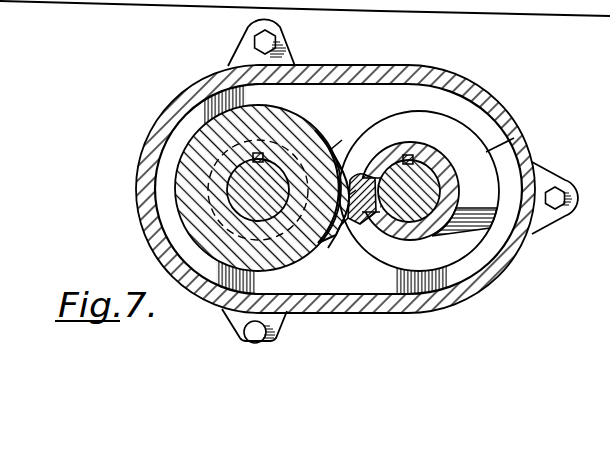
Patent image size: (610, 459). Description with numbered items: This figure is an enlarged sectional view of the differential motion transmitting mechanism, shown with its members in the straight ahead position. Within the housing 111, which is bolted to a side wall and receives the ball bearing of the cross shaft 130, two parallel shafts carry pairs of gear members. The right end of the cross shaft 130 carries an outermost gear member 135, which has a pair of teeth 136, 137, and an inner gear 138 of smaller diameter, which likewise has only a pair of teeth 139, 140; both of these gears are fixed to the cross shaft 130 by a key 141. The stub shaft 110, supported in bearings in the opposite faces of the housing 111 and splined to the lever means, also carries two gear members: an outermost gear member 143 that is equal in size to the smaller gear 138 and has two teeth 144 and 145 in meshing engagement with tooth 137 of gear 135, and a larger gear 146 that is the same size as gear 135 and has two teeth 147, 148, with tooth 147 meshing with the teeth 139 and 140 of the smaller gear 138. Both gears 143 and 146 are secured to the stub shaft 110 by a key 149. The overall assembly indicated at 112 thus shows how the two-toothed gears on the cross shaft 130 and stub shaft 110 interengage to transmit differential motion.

The stub shaft 110 is at (433, 184).
The housing 111 is at (491, 93).
The housing 112 is at (200, 72).
The cross shaft 130 is at (243, 209).
The outermost gear member 135 is at (203, 243).
The tooth 136 is at (345, 232).
The tooth 137 is at (357, 224).
The inner gear 138 is at (207, 192).
The tooth 139 is at (322, 128).
The tooth 140 is at (330, 215).
The key 141 is at (255, 155).
The outermost gear member 143 is at (472, 215).
The tooth 144 is at (366, 226).
The tooth 145 is at (392, 235).
The larger gear 146 is at (520, 133).
The tooth 147 is at (346, 164).
The tooth 148 is at (342, 140).
The key 149 is at (411, 155).